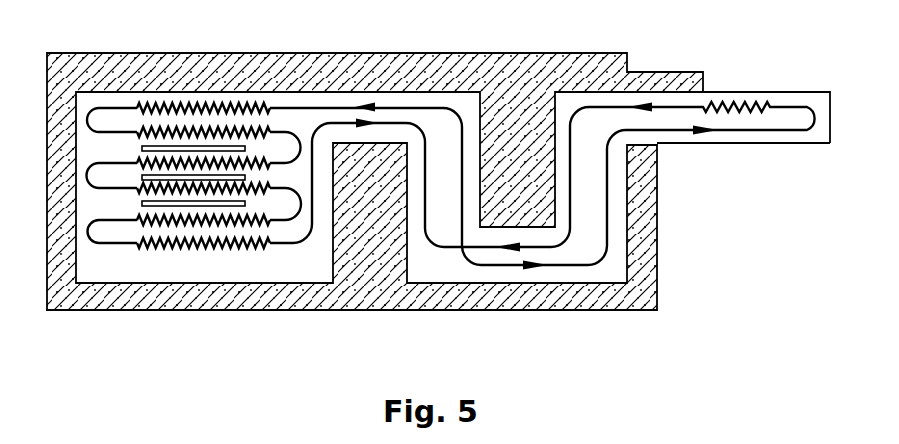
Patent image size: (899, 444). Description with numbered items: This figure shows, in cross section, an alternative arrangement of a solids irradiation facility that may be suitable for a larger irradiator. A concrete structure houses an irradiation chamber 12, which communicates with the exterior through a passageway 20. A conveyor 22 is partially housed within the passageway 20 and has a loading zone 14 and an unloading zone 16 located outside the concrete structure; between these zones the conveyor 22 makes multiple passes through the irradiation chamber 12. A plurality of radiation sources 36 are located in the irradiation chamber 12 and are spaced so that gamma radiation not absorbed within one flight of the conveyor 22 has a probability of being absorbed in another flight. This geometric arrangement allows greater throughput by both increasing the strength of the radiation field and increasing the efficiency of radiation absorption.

The irradiation chamber 12 is at (199, 274).
The loading zone 14 is at (729, 80).
The unloading zone 16 is at (790, 147).
The passageway 20 is at (458, 204).
The conveyor 22 is at (604, 266).
The radiation sources 36 is at (162, 146).